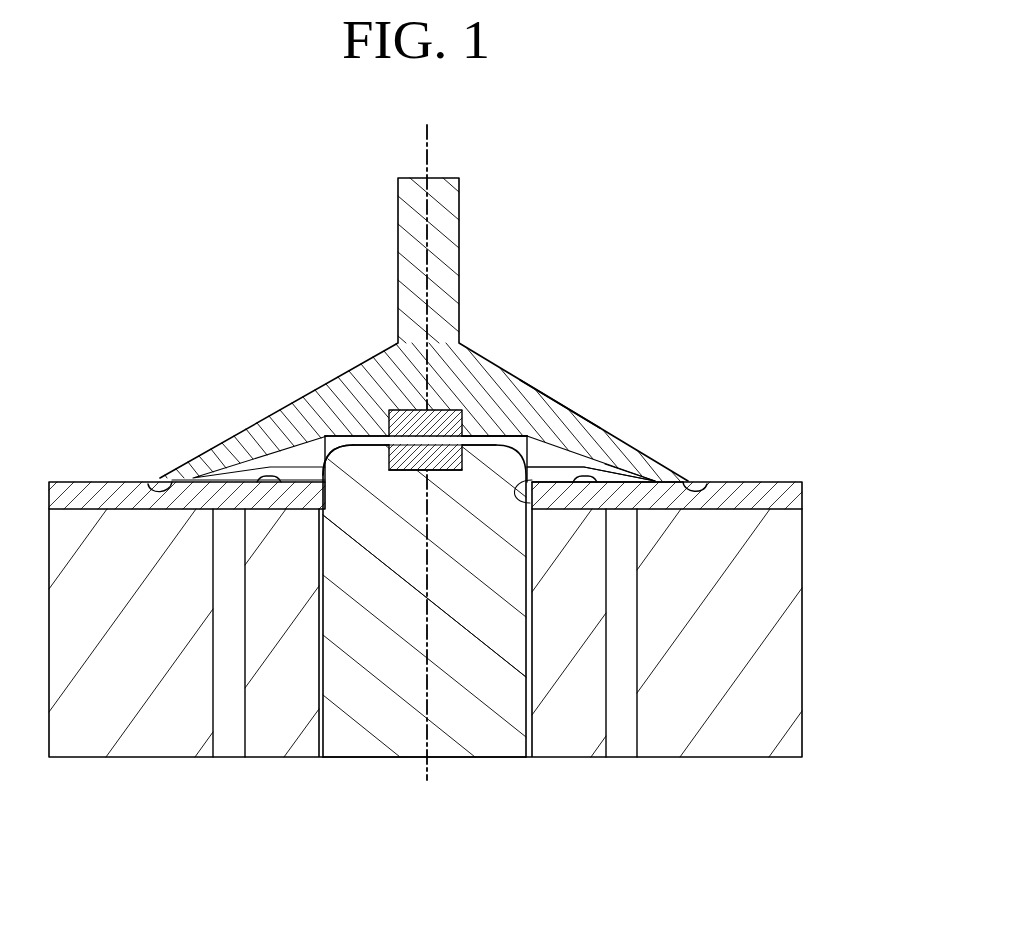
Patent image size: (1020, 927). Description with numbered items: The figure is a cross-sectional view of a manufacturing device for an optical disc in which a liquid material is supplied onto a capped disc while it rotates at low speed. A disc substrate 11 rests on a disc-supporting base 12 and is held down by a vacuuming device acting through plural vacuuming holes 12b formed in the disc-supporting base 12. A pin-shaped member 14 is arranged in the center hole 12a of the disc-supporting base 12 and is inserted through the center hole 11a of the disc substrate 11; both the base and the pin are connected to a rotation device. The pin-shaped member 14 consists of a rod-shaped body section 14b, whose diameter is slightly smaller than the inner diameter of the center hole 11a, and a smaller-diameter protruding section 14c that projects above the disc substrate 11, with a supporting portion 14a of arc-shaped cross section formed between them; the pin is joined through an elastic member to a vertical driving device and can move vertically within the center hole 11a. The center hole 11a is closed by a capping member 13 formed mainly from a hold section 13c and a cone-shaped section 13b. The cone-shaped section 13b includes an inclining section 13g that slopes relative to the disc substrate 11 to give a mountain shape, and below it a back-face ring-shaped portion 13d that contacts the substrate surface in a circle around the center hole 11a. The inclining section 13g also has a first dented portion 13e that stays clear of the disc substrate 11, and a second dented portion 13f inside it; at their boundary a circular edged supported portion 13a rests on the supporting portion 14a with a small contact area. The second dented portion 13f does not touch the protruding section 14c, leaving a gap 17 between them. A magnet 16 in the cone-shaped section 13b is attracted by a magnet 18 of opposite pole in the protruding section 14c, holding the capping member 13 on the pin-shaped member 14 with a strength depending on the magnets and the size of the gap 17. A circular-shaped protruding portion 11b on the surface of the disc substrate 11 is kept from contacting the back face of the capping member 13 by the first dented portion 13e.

The disc substrate 11 is at (803, 489).
The center hole 11a is at (610, 478).
The circular-shaped protruding portion 11b is at (266, 474).
The disc-supporting base 12 is at (790, 650).
The center hole 12a is at (320, 708).
The vacuuming holes 12b is at (637, 730).
The capping member 13 is at (286, 234).
The supported portion 13a is at (560, 430).
The cone-shaped section 13b is at (385, 368).
The hold section 13c is at (399, 253).
The back-face ring-shaped portion 13d is at (710, 480).
The first dented portion 13e is at (632, 470).
The second dented portion 13f is at (490, 433).
The inclining section 13g is at (530, 380).
The pin-shaped member 14 is at (497, 787).
The supporting portion 14a is at (345, 447).
The rod-shaped body section 14b is at (413, 733).
The protruding section 14c is at (327, 436).
The magnet 16 is at (443, 417).
The gap 17 is at (335, 438).
The magnet 18 is at (410, 462).